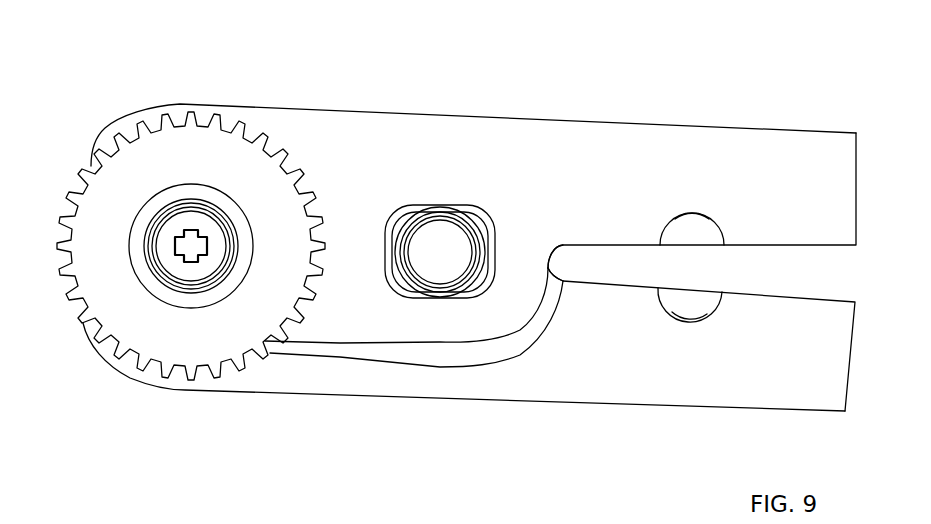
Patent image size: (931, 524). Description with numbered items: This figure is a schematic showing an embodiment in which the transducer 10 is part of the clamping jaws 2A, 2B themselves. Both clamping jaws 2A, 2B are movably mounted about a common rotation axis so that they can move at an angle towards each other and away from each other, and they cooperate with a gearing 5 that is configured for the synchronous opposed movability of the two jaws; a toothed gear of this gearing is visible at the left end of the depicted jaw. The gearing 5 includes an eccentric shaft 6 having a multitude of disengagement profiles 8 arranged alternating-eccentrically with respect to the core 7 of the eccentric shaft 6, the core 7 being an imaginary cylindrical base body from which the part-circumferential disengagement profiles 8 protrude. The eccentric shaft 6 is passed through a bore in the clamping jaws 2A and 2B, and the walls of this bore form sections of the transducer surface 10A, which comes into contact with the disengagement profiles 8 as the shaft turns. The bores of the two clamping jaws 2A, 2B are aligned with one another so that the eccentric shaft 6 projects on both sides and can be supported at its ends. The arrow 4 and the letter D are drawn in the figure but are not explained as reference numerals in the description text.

The gearing 5 is at (305, 84).
The clamping jaw 2A is at (678, 388).
The clamping jaw 2B is at (740, 141).
The slot direction 4 is at (828, 270).
The gear D is at (188, 245).
The transducer 10 is at (400, 188).
The transducer surface 10A is at (437, 203).
The disengagement profiles 8 is at (463, 212).
The core 7 is at (468, 227).
The eccentric shaft 6 is at (443, 270).